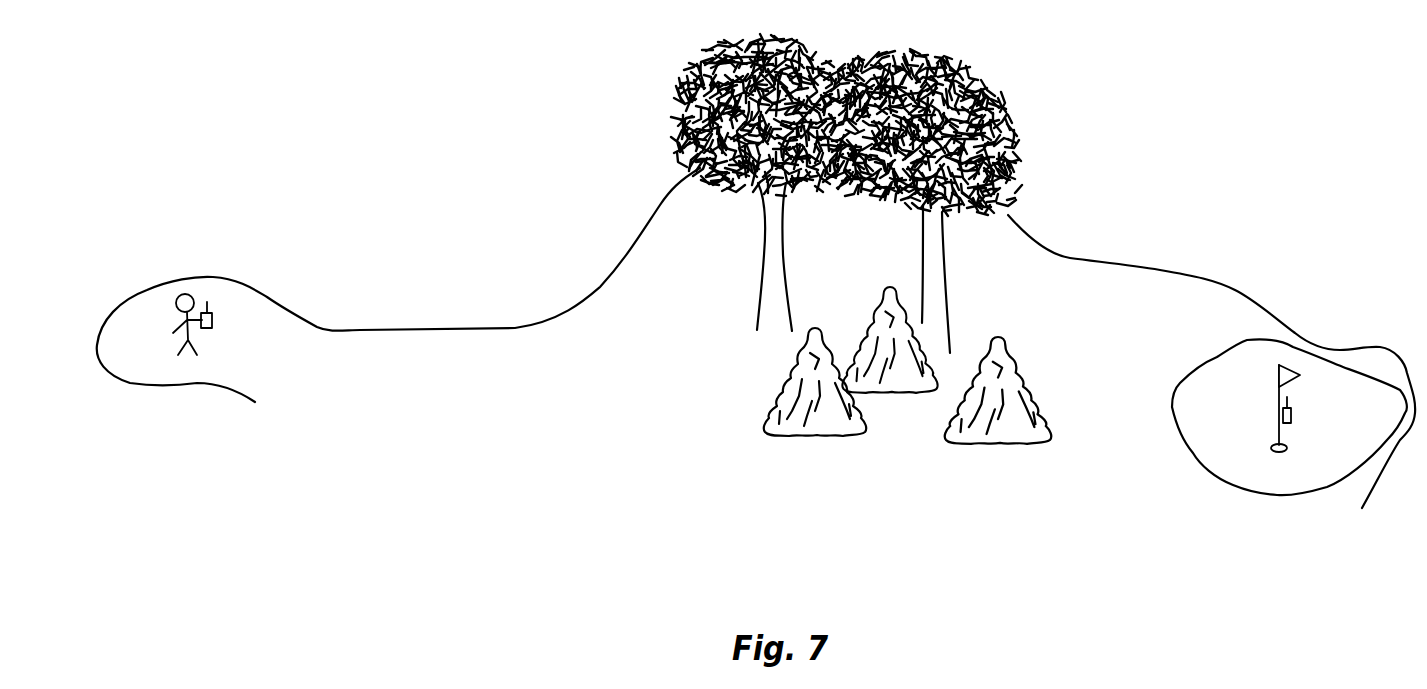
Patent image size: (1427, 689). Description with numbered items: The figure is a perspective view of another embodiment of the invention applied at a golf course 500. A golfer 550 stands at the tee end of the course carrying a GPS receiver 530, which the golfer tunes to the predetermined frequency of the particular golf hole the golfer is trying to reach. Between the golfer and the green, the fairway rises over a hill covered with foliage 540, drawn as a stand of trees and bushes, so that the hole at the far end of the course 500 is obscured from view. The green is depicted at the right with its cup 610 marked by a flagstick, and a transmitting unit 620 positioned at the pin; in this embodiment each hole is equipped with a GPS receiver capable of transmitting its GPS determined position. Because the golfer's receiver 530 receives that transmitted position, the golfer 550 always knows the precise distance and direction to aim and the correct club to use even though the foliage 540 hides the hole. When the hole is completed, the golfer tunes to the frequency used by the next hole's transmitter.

The golf course 500 is at (376, 433).
The GPS receiver 530 is at (212, 320).
The foliage 540 is at (728, 376).
The golfer 550 is at (176, 303).
The hole cup 610 is at (1272, 450).
The pin unit 620 is at (1291, 415).